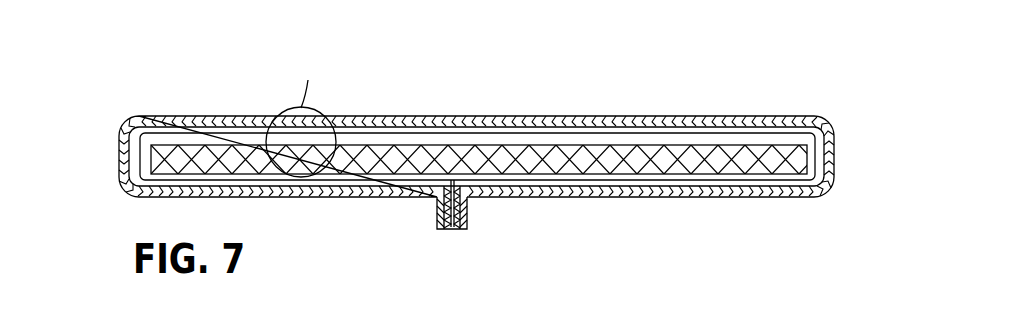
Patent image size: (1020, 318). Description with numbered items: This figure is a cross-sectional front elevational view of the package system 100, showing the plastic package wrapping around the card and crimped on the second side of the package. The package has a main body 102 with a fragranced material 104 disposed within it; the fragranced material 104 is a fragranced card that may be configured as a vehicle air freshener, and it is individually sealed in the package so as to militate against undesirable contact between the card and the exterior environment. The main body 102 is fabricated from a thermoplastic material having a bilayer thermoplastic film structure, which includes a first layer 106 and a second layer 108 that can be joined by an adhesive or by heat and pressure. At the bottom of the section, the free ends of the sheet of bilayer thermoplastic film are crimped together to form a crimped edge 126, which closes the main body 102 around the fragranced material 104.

The package system 100 is at (777, 66).
The main body 102 is at (772, 213).
The fragranced material 104 is at (685, 147).
The first layer 106 is at (828, 153).
The second layer 108 is at (825, 122).
The crimped edge 126 is at (454, 229).